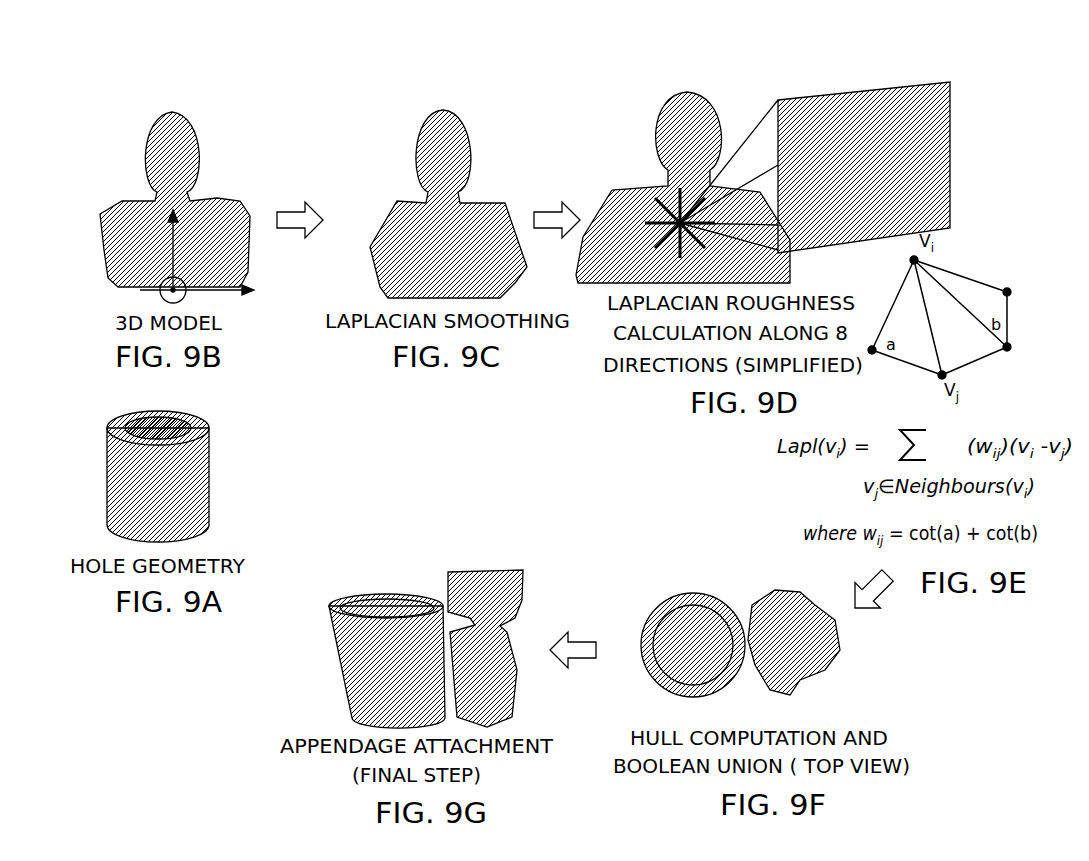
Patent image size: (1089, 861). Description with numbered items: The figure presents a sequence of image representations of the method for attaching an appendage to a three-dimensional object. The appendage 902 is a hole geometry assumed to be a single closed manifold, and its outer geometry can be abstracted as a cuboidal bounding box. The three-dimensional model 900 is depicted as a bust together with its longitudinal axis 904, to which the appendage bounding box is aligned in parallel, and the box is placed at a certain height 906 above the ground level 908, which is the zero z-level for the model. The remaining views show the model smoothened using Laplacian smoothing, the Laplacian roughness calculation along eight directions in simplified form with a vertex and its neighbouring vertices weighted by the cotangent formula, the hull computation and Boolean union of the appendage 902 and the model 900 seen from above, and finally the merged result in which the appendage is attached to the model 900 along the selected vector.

In FIG. 9B, the 3D model 900 is at (263, 175).
In FIG. 9F, the appendage 902 is at (630, 661).
In FIG. 9G, the appendage 902 is at (330, 658).
In FIG. 9B, the longitudinal axis of the 3D model 904 is at (168, 247).
In FIG. 9B, the height 906 is at (160, 290).
In FIG. 9B, the ground level 908 is at (228, 296).